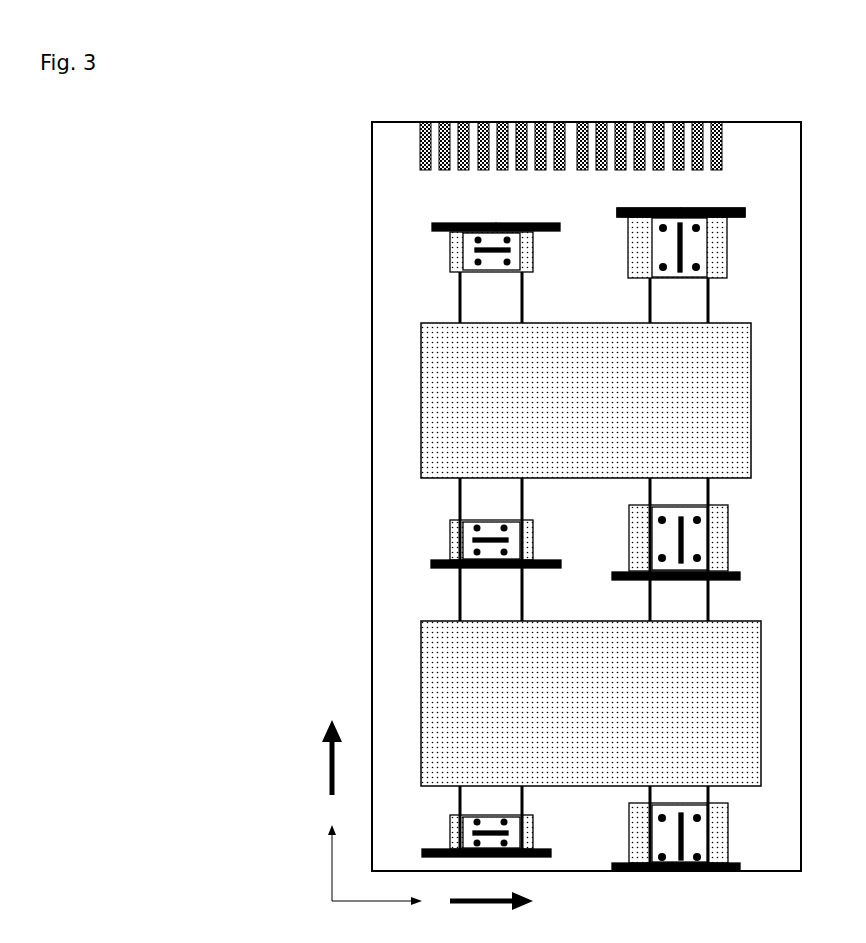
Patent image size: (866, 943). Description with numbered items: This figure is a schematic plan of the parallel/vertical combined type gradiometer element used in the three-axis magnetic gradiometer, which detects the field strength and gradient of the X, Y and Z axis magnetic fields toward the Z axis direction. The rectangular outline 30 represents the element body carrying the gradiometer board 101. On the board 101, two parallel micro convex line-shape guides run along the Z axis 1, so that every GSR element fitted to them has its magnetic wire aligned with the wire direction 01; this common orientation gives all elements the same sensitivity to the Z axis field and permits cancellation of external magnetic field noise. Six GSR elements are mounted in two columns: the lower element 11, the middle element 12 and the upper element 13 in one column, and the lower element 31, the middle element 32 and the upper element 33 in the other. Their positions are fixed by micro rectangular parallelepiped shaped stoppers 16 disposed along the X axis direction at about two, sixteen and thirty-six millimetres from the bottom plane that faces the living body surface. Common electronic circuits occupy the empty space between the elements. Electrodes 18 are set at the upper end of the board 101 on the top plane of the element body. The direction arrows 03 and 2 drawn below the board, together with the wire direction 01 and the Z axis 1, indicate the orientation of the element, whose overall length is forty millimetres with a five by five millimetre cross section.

The housing 30 is at (360, 180).
The electrodes 18 is at (729, 148).
The micro rectangular parallelepiped shaped stoppers 16 is at (754, 203).
The GSR element 13 is at (729, 252).
The GSR element 12 is at (731, 557).
The GSR element 11 is at (732, 847).
The GSR element 33 is at (442, 262).
The GSR element 32 is at (437, 530).
The GSR element 31 is at (440, 830).
The gradiometer board 101 is at (395, 577).
The wire direction 01 is at (318, 757).
The third direction 03 is at (491, 913).
The Z axis 1 is at (315, 863).
The second axis 2 is at (377, 916).